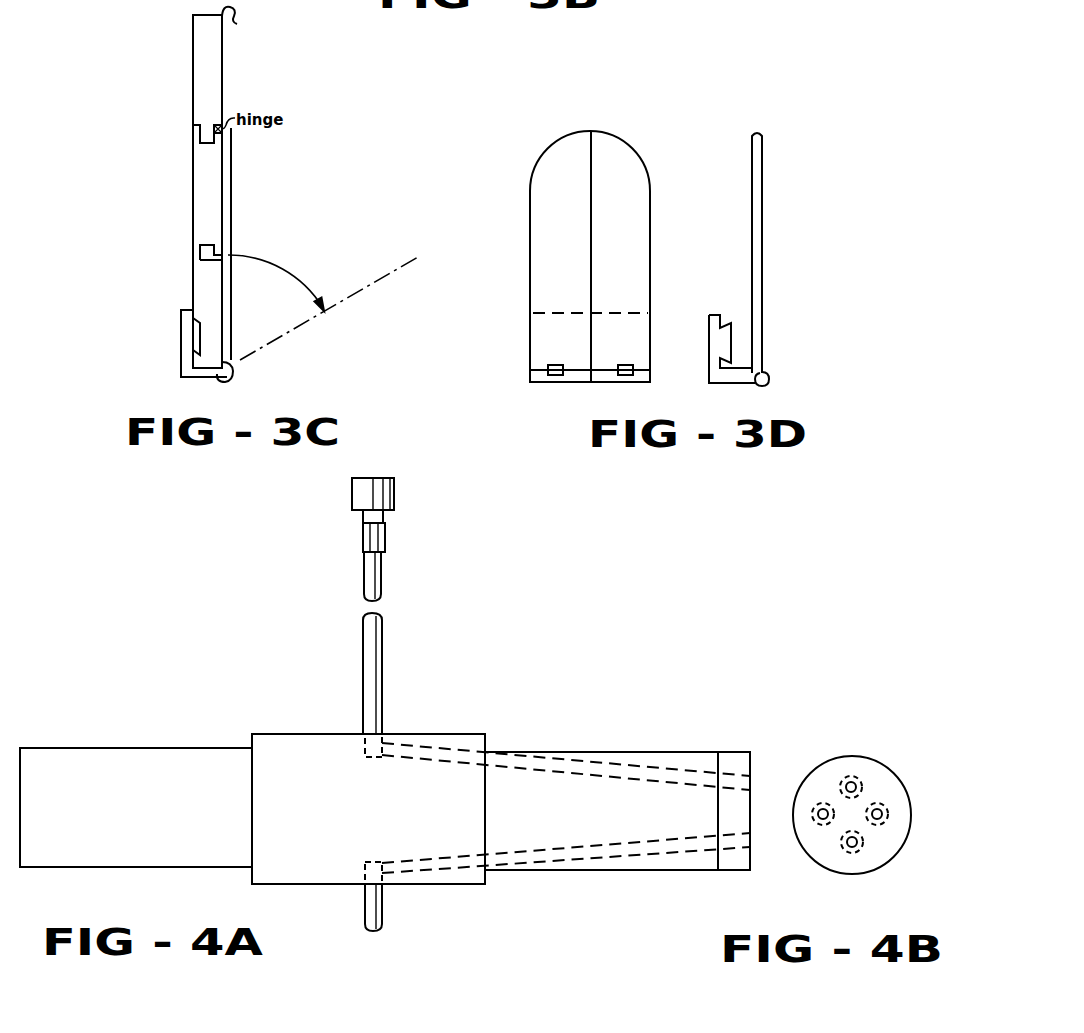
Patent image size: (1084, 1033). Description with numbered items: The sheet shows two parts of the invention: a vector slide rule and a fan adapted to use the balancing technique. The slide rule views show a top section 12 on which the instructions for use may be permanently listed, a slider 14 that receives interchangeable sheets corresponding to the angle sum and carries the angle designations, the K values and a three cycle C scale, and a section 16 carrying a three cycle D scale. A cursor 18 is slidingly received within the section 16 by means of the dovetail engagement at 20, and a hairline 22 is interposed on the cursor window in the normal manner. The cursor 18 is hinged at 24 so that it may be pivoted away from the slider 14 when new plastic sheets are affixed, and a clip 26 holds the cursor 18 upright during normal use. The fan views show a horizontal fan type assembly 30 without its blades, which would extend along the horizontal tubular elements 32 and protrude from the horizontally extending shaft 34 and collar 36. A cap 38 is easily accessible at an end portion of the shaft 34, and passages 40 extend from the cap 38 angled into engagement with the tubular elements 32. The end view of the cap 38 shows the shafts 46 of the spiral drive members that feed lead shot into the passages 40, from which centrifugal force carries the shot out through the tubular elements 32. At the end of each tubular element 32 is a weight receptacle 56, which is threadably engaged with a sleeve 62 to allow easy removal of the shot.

In FIG. 3C, the top section 12 is at (193, 76).
In FIG. 3C, the slider 14 is at (193, 180).
In FIG. 3C, the section 16 is at (193, 279).
In FIG. 3D, the cursor 18 is at (753, 170).
In FIG. 3C, the dovetail engagement 20 is at (181, 339).
In FIG. 3D, the hairline 22 is at (593, 229).
In FIG. 3D, the hinge 24 is at (556, 377).
In FIG. 3C, the clip 26 is at (235, 379).
In FIG. 4A, the horizontal fan type assembly 30 is at (236, 715).
In FIG. 4A, the tubular elements 32 is at (381, 579).
In FIG. 4A, the shaft 34 is at (641, 752).
In FIG. 4A, the collar 36 is at (455, 734).
In FIG. 4A, the cap 38 is at (728, 752).
In FIG. 4B, the cap 38 is at (850, 755).
In FIG. 4A, the passages 40 is at (567, 765).
In FIG. 4B, the shaft 46 is at (879, 812).
In FIG. 4A, the weight receptacle 56 is at (394, 493).
In FIG. 4A, the sleeve 62 is at (385, 541).